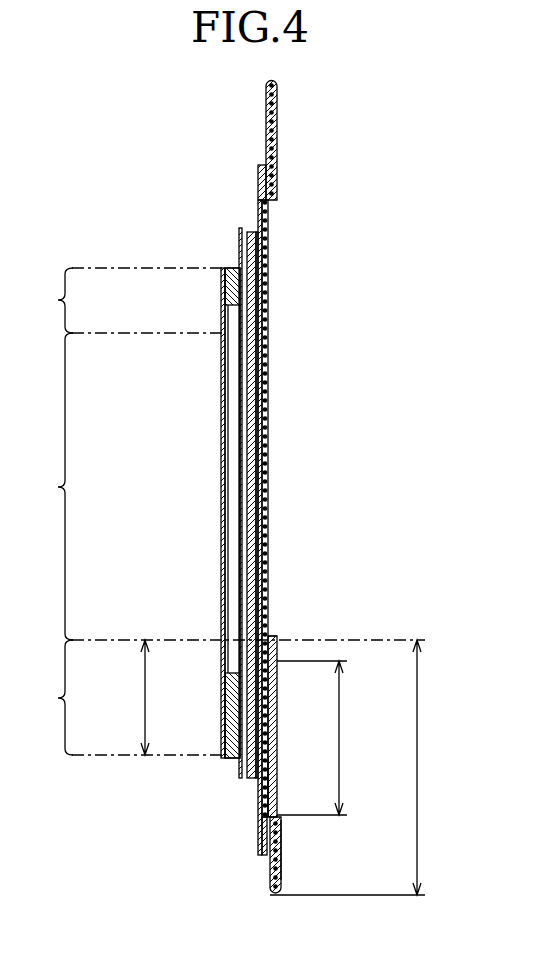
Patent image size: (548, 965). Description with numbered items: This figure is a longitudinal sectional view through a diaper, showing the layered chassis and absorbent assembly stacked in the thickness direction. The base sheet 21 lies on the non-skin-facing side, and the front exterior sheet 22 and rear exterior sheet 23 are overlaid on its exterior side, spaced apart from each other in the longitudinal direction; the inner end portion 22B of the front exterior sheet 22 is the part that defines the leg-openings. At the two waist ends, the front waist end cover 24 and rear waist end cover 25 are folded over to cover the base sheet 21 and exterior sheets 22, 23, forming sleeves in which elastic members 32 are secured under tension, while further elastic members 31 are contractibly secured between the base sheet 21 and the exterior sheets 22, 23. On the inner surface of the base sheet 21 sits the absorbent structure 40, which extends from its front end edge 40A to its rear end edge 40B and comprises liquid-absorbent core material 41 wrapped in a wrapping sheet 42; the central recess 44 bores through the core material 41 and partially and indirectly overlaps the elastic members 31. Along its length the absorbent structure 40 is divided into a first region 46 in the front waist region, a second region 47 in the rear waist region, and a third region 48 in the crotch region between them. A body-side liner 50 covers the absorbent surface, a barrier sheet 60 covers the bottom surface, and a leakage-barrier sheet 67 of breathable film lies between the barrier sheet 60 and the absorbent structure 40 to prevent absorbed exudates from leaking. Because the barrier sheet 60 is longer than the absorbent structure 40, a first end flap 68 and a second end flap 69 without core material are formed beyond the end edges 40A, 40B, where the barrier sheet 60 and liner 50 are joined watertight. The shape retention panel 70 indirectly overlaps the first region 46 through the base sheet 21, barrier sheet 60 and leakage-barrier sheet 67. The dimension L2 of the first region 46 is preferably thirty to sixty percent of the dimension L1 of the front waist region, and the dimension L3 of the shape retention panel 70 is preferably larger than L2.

The base sheet 21 is at (263, 486).
The front exterior sheet 22 is at (299, 701).
The inner end portion 22B is at (274, 638).
The rear exterior sheet 23 is at (268, 250).
The front waist end cover 24 is at (293, 840).
The rear waist end cover 25 is at (306, 486).
The elastic members 31 is at (258, 203).
The elastic members 32 is at (277, 118).
The absorbent structure 40 is at (176, 529).
The front end edge 40A is at (176, 747).
The rear end edge 40B is at (176, 270).
The liquid-absorbent core material 41 is at (228, 296).
The wrapping sheet 42 is at (234, 357).
The central recess 44 is at (237, 403).
The first region 46 is at (47, 697).
The second region 47 is at (47, 300).
The third region 48 is at (47, 486).
The body-side liner 50 is at (222, 490).
The barrier sheet 60 is at (266, 522).
The leakage-barrier sheet 67 is at (237, 268).
The first end flap 68 is at (228, 758).
The second end flap 69 is at (211, 490).
The shape retention panel 70 is at (273, 768).
The dimension L1 is at (417, 773).
The dimension L2 is at (145, 690).
The dimension L3 is at (340, 737).